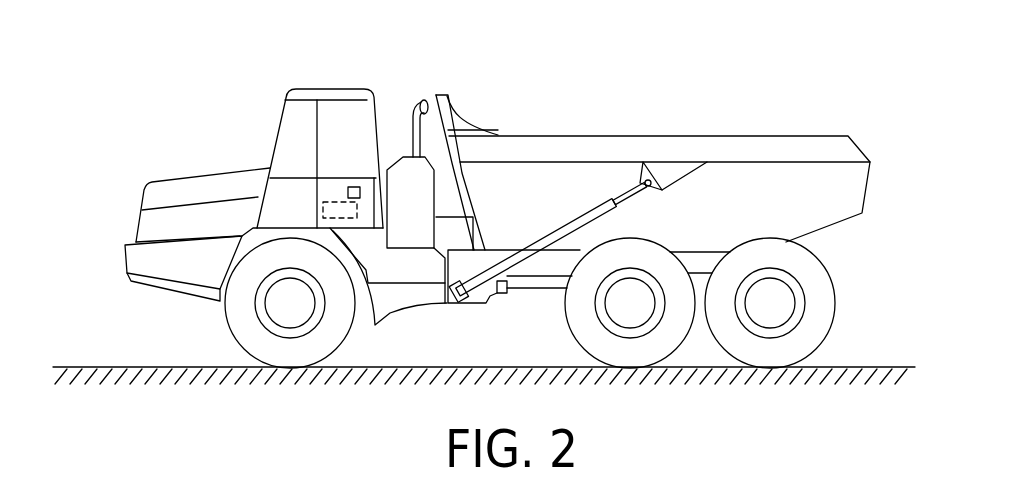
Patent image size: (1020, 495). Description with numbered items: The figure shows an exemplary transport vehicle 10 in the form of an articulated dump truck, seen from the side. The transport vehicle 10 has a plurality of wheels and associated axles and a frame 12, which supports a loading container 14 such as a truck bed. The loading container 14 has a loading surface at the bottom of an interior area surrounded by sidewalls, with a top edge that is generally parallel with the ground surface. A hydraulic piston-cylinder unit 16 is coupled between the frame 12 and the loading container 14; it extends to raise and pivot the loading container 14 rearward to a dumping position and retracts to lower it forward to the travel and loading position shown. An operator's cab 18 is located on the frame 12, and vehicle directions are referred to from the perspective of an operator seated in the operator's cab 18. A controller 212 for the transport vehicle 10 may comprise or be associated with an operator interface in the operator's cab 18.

The transport vehicle 10 is at (128, 184).
The frame 12 is at (167, 253).
The loading container 14 is at (800, 135).
The hydraulic piston-cylinder unit 16 is at (530, 253).
The operator's cab 18 is at (292, 157).
The controller 212 is at (353, 210).